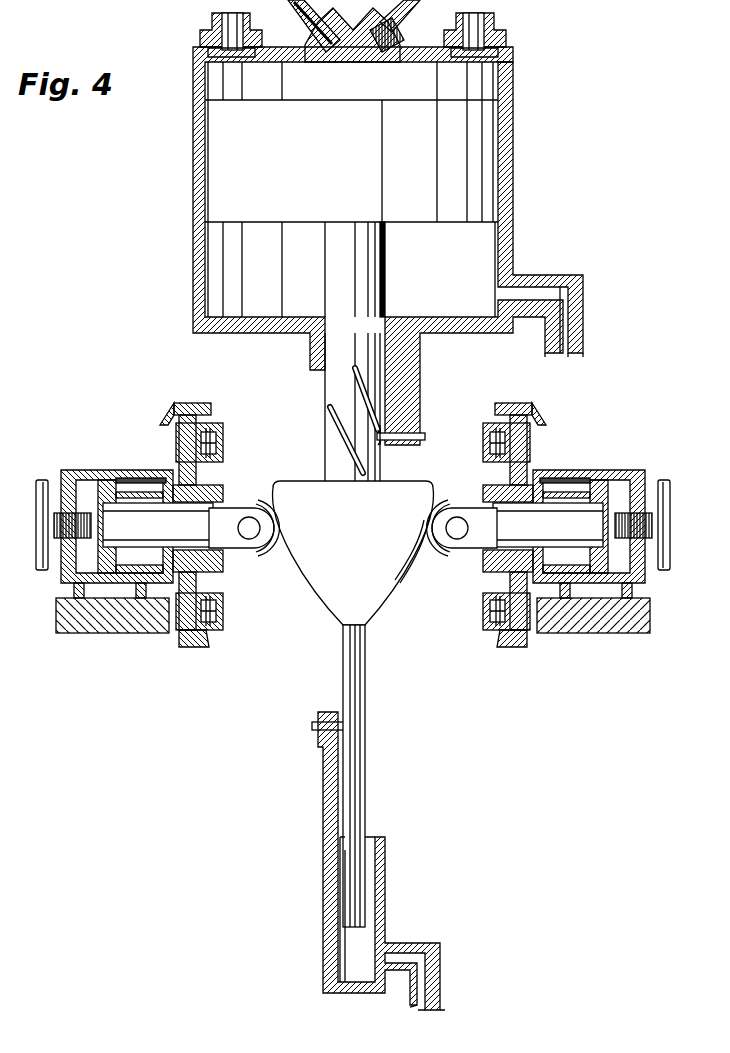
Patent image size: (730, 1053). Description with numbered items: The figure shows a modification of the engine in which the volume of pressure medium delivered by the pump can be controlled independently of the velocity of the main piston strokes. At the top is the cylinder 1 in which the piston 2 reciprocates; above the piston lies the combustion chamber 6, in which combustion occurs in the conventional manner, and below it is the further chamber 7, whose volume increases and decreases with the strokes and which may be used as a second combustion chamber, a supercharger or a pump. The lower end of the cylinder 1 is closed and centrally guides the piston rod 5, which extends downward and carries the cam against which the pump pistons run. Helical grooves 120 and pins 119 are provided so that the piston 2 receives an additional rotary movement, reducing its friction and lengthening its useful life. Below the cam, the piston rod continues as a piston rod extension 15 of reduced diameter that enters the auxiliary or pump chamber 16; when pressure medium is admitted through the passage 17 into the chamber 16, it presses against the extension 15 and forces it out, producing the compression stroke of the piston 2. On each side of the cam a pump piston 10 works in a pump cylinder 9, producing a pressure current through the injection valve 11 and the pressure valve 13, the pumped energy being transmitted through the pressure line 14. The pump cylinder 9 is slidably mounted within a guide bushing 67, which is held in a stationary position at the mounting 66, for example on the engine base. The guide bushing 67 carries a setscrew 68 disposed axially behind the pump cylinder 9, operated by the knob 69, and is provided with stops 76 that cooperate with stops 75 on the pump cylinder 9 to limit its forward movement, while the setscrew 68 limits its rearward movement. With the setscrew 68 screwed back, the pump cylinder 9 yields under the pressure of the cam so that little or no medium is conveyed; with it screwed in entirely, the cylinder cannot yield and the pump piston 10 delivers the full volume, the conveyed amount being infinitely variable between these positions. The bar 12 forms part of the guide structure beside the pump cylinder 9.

The cylinder 1 is at (513, 128).
The piston 2 is at (337, 161).
The piston rod 5 is at (335, 478).
The combustion chamber 6 is at (447, 84).
The further chamber 7 is at (445, 258).
The pump cylinder 9 is at (565, 547).
The pump piston 10 is at (555, 521).
The injection valve 11 is at (490, 608).
The lower guide bar 12 is at (505, 641).
The pressure valve 13 is at (495, 425).
The pressure line 14 is at (520, 415).
The piston rod extension 15 is at (360, 760).
The auxiliary or pump chamber 16 is at (378, 886).
The passage 17 is at (405, 950).
The mounting 66 is at (650, 612).
The guide bushing 67 is at (625, 470).
The setscrew 68 is at (652, 526).
The knob 69 is at (670, 491).
The stops 75 is at (597, 480).
The stops 76 is at (556, 478).
The pins 119 is at (425, 437).
The helical grooves 120 is at (355, 368).